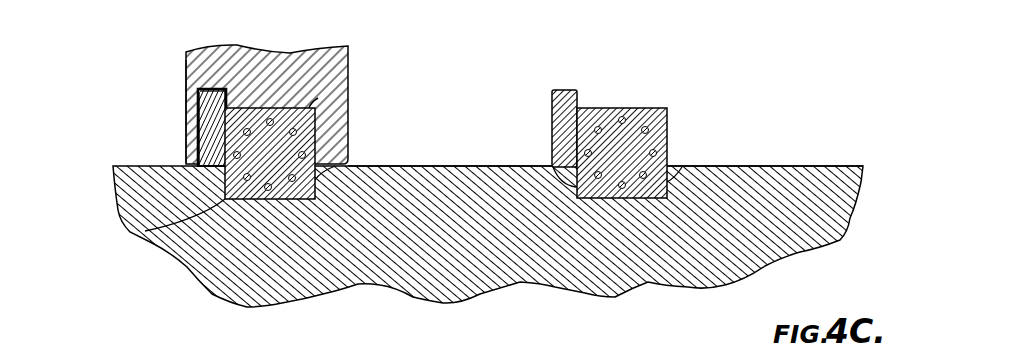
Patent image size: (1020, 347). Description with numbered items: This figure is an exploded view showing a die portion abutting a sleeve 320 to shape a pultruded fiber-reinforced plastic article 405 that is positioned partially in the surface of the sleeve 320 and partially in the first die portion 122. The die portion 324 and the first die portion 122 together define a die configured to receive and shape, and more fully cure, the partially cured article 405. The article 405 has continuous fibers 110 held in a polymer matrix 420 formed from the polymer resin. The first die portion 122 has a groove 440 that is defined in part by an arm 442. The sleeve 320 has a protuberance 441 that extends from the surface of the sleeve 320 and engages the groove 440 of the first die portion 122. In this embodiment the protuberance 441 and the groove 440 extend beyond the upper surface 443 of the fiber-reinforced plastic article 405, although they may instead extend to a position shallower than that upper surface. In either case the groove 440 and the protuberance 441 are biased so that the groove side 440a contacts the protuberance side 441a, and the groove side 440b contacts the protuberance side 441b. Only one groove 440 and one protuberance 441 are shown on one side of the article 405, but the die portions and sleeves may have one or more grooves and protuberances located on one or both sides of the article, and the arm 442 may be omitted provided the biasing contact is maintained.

The continuous fibers 110 is at (295, 181).
The first die portion 122 is at (348, 137).
The sleeve 320 is at (458, 103).
The die portion 324 is at (335, 166).
The fiber-reinforced plastic article 405 is at (439, 192).
The polymer matrix 420 is at (260, 199).
The groove 440 is at (224, 106).
The groove side 440a is at (198, 108).
The groove side 440b is at (226, 107).
The protuberance 441 is at (215, 95).
The protuberance side 441a is at (225, 182).
The protuberance side 441b is at (226, 110).
The arm 442 is at (186, 143).
The upper surface 443 is at (318, 98).